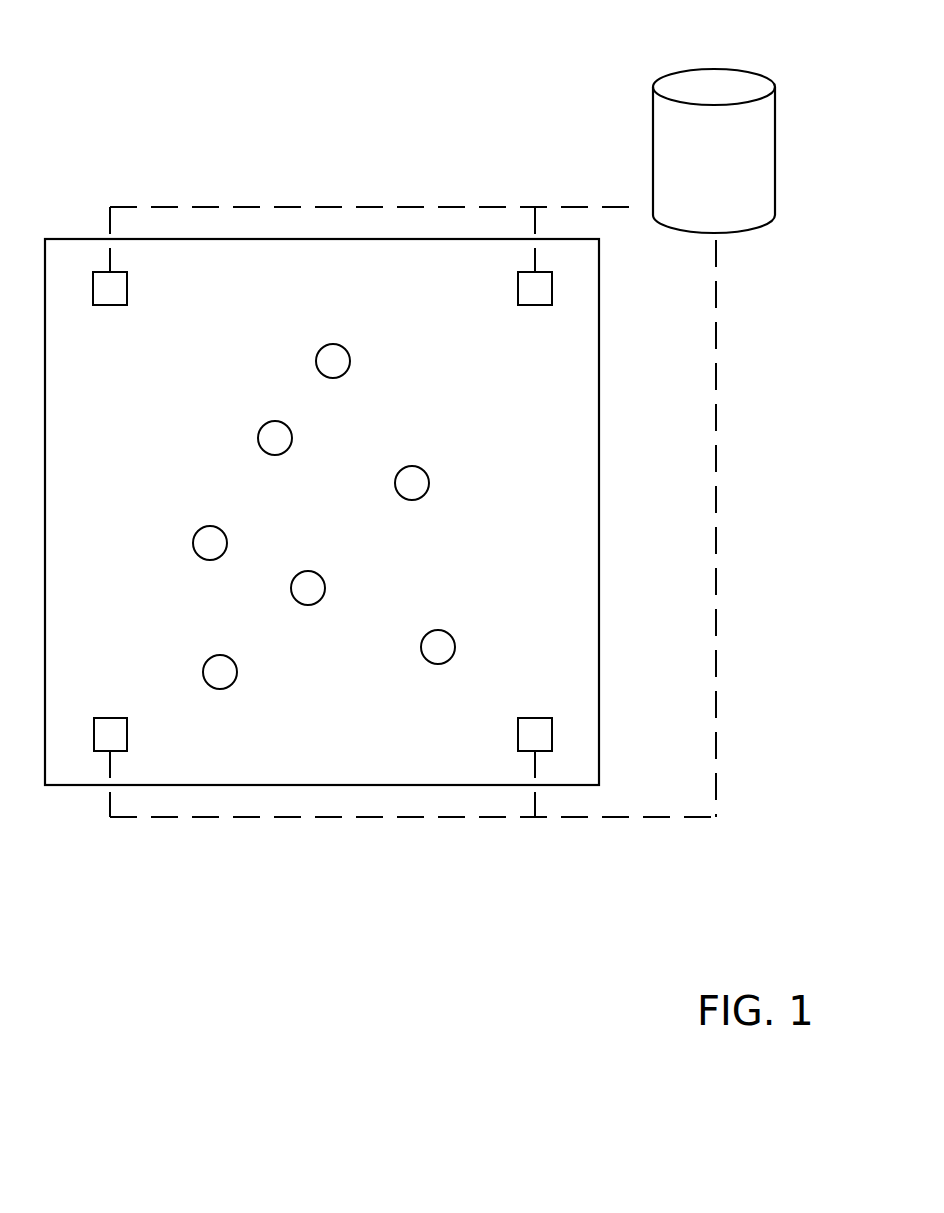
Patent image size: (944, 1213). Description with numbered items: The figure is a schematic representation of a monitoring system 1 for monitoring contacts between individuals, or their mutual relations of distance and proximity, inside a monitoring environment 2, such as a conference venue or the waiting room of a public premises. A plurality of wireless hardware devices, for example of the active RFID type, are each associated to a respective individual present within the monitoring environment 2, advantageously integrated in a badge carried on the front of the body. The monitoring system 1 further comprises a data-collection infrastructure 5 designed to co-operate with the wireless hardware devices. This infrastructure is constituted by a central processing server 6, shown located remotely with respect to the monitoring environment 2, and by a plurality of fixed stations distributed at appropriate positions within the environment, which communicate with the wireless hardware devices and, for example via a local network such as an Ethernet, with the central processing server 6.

The monitoring system 1 is at (118, 105).
The monitoring environment 2 is at (77, 800).
The data-collection infrastructure 5 is at (568, 168).
The central processing server 6 is at (752, 157).